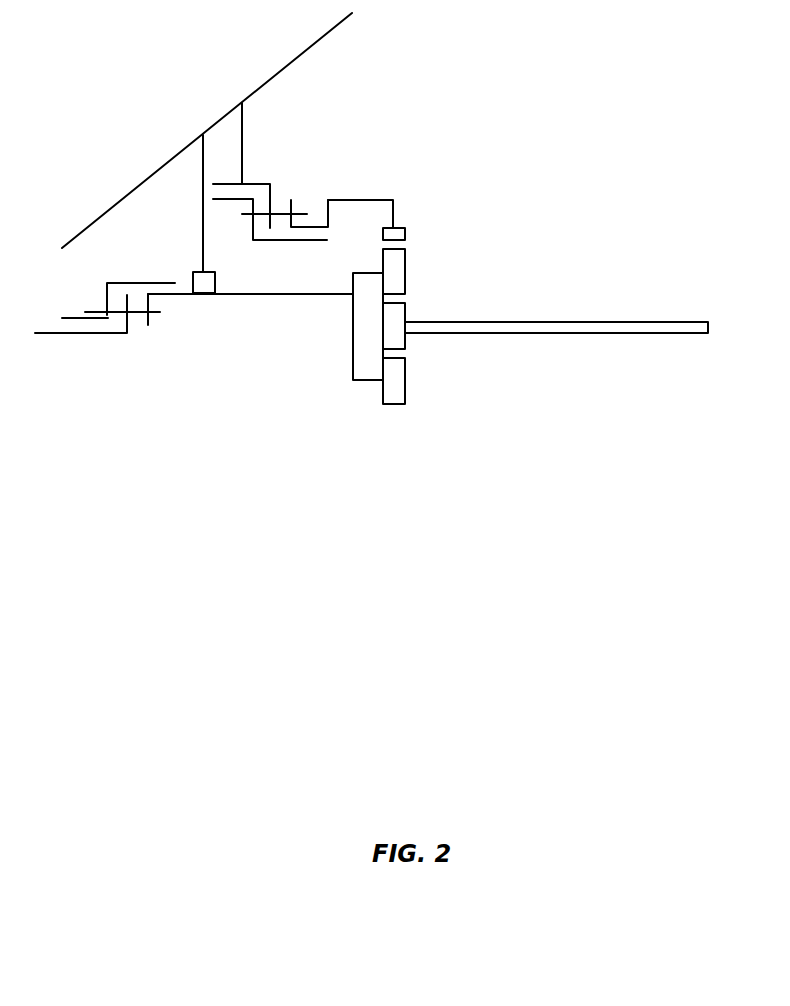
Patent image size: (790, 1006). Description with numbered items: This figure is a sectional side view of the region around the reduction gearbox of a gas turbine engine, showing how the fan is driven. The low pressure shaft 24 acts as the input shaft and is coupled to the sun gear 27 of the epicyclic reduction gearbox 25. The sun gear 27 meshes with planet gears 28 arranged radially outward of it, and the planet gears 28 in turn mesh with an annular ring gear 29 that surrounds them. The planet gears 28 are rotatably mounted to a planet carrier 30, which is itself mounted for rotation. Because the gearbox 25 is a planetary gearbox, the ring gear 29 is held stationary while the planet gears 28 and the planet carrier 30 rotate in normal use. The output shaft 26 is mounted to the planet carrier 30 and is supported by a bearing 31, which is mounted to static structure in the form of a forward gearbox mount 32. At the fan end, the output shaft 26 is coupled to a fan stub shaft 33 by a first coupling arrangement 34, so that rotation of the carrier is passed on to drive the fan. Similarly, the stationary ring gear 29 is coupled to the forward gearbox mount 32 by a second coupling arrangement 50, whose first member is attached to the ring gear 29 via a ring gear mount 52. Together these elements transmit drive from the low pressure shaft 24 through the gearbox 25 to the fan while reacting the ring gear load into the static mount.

The low pressure shaft 24 is at (557, 322).
The epicyclic reduction gearbox 25 is at (447, 402).
The output shaft 26 is at (242, 294).
The sun gear 27 is at (393, 350).
The planet gears 28 is at (405, 273).
The annular ring gear 29 is at (405, 233).
The planet carrier 30 is at (353, 370).
The bearing 31 is at (203, 258).
The forward gearbox mount 32 is at (322, 42).
The fan stub shaft 33 is at (35, 333).
The first coupling arrangement 34 is at (126, 352).
The second coupling arrangement 50 is at (287, 185).
The ring gear mount 52 is at (370, 199).